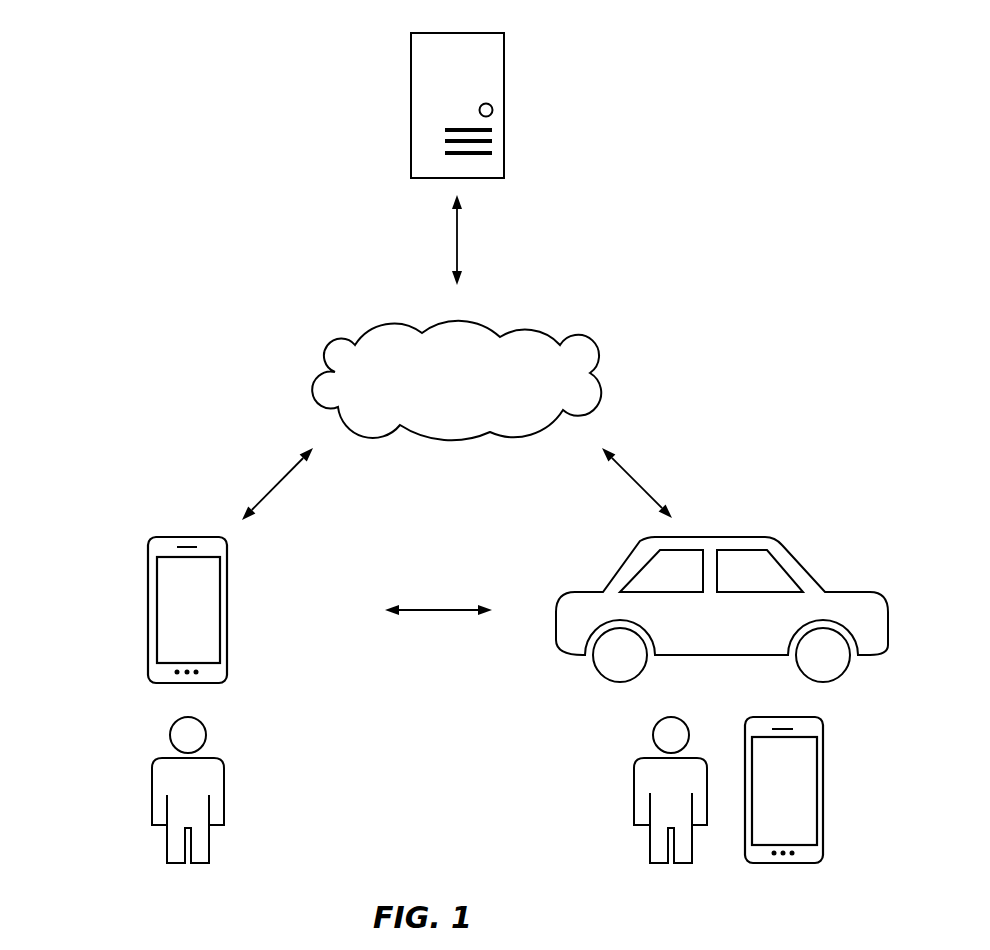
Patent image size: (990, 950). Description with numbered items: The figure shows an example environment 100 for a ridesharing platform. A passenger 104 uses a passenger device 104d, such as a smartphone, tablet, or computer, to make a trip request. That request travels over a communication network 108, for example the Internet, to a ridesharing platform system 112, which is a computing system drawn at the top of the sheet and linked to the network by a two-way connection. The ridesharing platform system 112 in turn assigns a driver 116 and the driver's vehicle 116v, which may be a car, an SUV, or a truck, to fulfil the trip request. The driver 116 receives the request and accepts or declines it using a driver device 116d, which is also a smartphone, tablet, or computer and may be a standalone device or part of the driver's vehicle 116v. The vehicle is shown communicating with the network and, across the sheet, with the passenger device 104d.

The environment 100 is at (676, 46).
The passenger 104 is at (152, 797).
The passenger device 104d is at (148, 617).
The communication network 108 is at (456, 380).
The ridesharing platform system 112 is at (411, 107).
The driver 116 is at (633, 797).
The driver device 116d is at (823, 789).
The driver's vehicle 116v is at (890, 625).